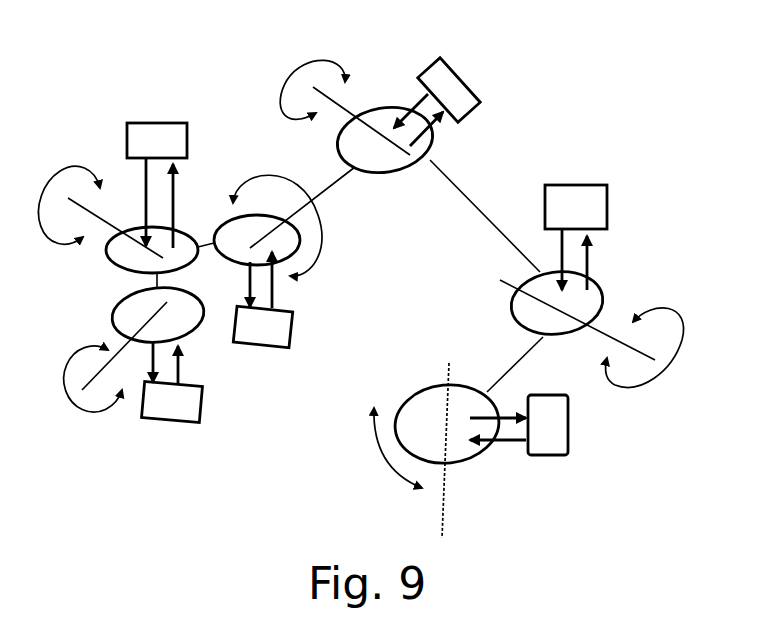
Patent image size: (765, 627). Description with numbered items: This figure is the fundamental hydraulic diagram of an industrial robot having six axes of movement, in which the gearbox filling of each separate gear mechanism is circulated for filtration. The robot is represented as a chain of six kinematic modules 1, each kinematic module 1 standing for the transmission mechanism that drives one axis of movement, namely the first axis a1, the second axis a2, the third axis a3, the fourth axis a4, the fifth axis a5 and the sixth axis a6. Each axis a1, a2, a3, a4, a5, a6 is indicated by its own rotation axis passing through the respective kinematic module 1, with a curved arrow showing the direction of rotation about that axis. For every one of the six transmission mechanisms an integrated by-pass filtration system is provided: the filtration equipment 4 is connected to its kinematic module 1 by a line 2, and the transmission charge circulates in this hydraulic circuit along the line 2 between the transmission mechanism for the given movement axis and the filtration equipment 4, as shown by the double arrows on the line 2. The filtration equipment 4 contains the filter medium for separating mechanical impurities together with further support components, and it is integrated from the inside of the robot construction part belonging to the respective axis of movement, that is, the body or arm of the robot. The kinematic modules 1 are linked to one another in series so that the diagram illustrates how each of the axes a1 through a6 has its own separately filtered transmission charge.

The kinematic module 1 is at (356, 284).
The line 2 is at (366, 267).
The filtration equipment 4 is at (367, 256).
The axis 1 a1 is at (436, 450).
The axis 2 a2 is at (608, 333).
The axis 3 a3 is at (343, 90).
The axis 4 a4 is at (263, 235).
The axis 5 a5 is at (95, 198).
The axis 6 a6 is at (115, 384).